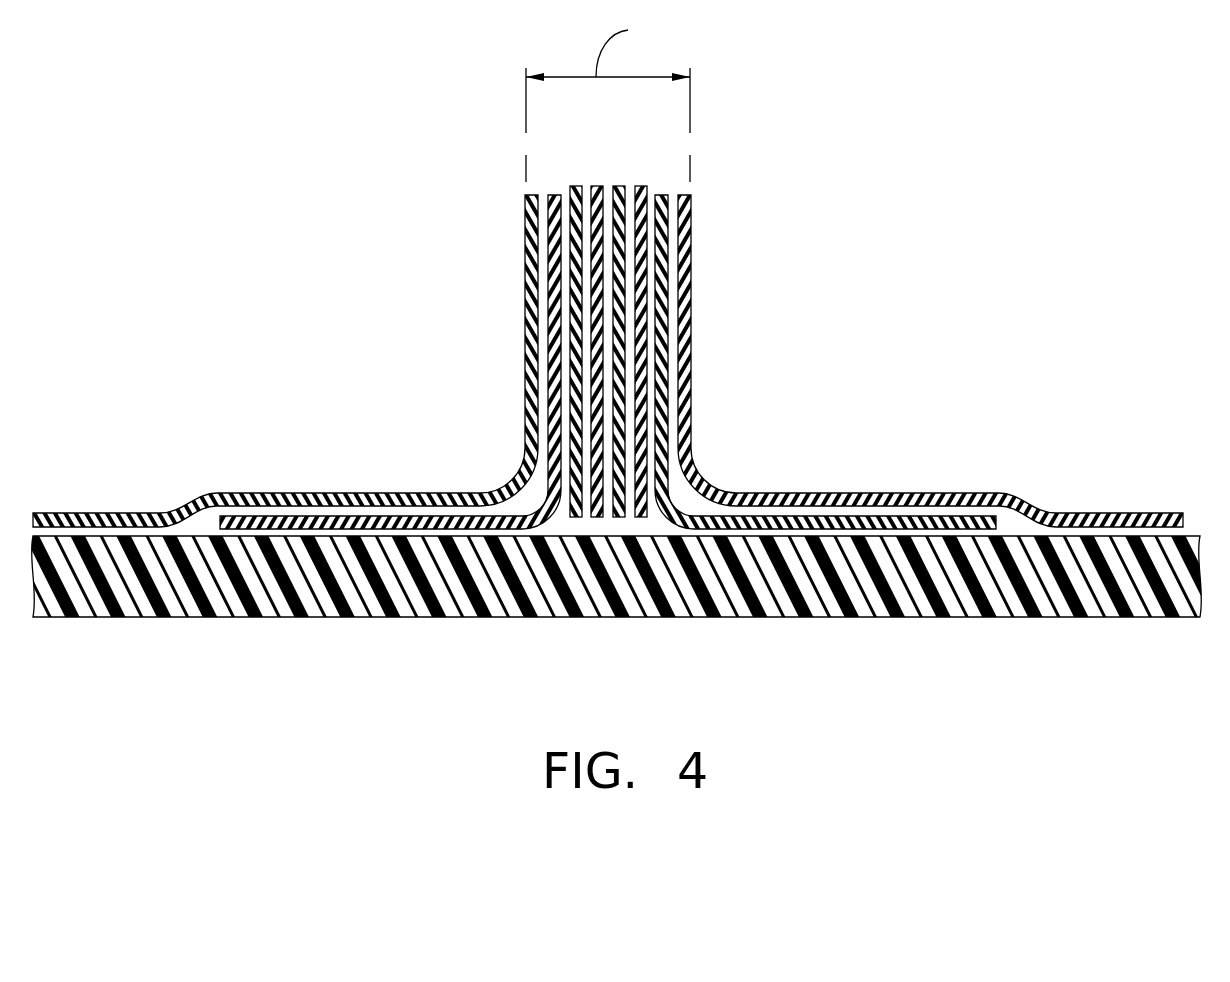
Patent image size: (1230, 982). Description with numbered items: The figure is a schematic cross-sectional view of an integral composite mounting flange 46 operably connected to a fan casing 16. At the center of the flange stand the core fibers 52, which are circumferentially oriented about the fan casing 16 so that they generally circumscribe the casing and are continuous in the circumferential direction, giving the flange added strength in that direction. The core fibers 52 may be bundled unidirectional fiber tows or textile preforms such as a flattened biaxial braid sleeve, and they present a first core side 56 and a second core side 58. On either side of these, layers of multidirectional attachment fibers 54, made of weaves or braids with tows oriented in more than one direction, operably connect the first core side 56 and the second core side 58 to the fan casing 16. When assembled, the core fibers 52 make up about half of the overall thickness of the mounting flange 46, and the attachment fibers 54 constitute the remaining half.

The fan casing 16 is at (170, 620).
The integral composite mounting flange 46 is at (617, 375).
The core fibers 52 is at (609, 304).
The multidirectional attachment fibers 54 is at (523, 243).
The first core side 56 is at (577, 180).
The second core side 58 is at (639, 180).